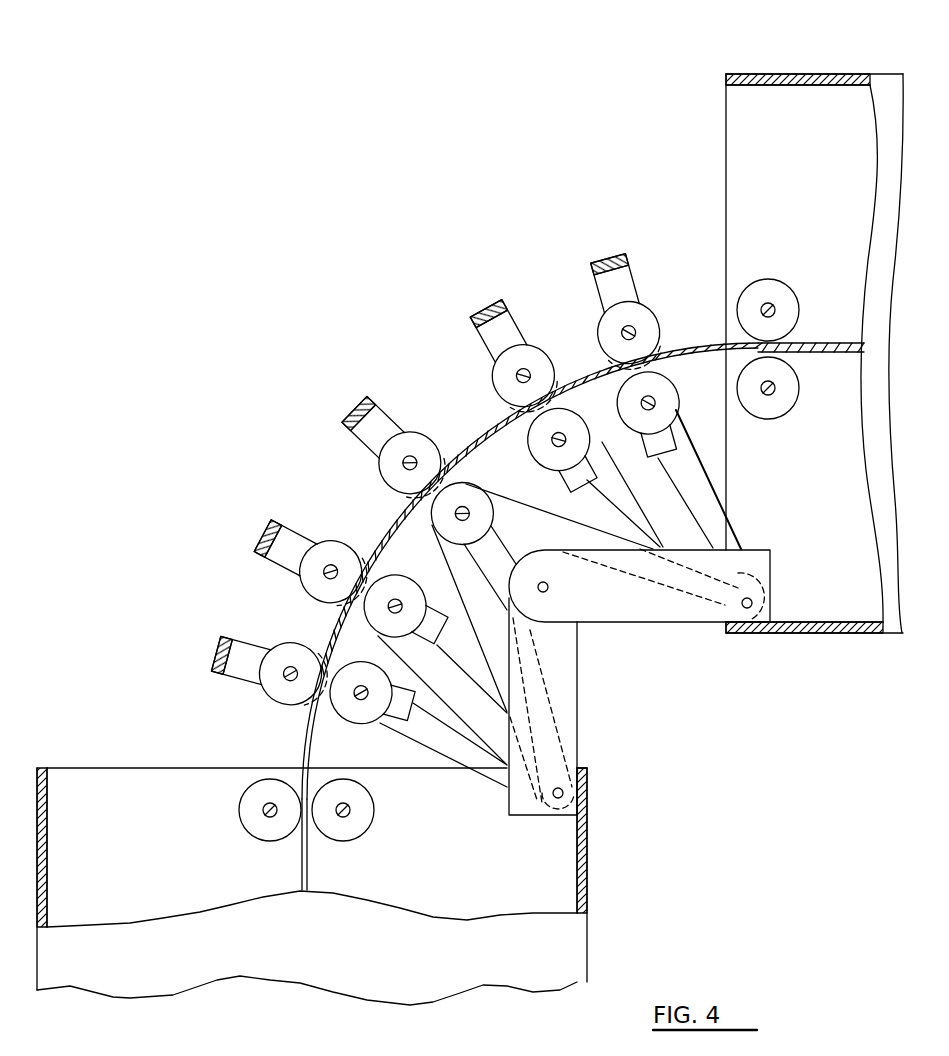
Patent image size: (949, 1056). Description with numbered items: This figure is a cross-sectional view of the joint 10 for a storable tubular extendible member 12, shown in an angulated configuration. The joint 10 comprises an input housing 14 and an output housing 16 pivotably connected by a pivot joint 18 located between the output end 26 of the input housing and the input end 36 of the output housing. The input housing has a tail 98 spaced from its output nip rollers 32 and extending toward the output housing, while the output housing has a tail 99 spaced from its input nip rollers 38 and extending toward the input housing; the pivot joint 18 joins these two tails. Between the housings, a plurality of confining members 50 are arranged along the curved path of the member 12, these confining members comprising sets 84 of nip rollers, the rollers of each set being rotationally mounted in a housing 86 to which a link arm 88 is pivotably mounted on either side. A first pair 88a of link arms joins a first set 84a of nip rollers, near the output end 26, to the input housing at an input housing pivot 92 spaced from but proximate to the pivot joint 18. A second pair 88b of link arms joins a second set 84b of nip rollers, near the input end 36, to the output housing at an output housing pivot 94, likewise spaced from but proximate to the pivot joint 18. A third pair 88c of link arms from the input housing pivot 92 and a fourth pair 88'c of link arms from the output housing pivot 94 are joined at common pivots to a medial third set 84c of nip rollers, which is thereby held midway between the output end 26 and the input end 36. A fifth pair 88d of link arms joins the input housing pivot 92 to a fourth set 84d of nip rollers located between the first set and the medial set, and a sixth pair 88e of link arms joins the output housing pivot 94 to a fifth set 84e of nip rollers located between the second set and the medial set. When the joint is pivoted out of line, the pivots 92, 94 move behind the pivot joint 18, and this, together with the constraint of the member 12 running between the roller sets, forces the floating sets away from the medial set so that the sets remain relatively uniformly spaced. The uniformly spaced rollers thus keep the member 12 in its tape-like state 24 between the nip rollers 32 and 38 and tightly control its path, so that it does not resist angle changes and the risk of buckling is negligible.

The joint 10 is at (358, 190).
The storable tubular extendible member 12 is at (302, 860).
The input housing 14 is at (38, 773).
The output housing 16 is at (776, 72).
The pivot joint 18 is at (549, 592).
The tape-like state 24 is at (463, 455).
The output end of the input housing 26 is at (140, 760).
The output nip rollers 32 is at (239, 805).
The input end of the output housing 36 is at (708, 106).
The input nip rollers 38 is at (767, 290).
The confining members 50 is at (327, 376).
The sets of nip rollers 84 is at (266, 698).
The first set of nip rollers 84a is at (275, 632).
The second set of nip rollers 84b is at (660, 310).
The third set of nip rollers 84c is at (368, 464).
The fourth set of nip rollers 84d is at (344, 543).
The fifth set of nip rollers 84e is at (552, 346).
The housing 86 is at (214, 664).
The link arm 88 is at (724, 479).
The first pair of link arms 88a is at (436, 740).
The second pair of link arms 88b is at (700, 489).
The third pair of link arms 88c is at (462, 566).
The fourth pair of link arms 88'c is at (536, 583).
The fifth pair of link arms 88d is at (406, 652).
The sixth pair of link arms 88e is at (603, 458).
The input housing pivot 92 is at (565, 793).
The output housing pivot 94 is at (748, 612).
The tail of the input housing 98 is at (572, 700).
The tail of the output housing 99 is at (673, 606).